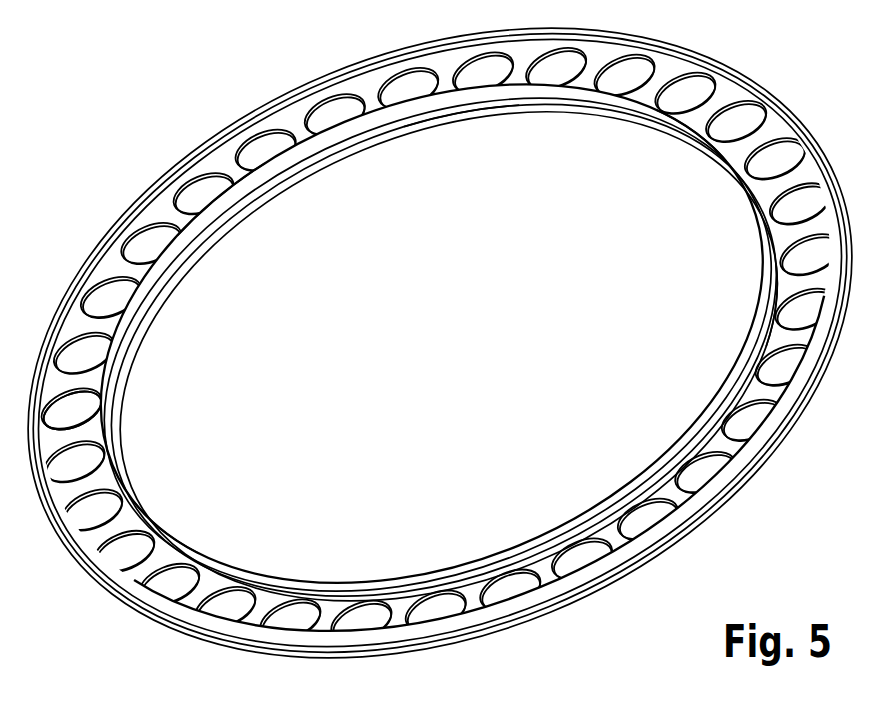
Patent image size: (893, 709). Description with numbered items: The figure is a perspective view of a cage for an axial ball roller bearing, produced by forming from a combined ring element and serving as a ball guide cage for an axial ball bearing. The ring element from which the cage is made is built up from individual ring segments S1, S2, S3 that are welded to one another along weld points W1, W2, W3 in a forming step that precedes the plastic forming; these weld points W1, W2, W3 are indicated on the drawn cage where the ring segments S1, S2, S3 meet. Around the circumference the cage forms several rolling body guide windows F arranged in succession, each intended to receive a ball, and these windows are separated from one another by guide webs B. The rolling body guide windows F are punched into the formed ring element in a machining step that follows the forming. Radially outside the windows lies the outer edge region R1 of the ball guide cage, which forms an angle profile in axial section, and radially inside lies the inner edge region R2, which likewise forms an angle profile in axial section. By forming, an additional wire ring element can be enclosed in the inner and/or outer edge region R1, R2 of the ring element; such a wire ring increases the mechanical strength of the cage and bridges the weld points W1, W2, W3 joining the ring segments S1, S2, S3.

The outer edge region R1 is at (150, 195).
The inner edge region R2 is at (170, 260).
The ring segment S1 is at (460, 108).
The ring segment S2 is at (750, 313).
The ring segment S3 is at (150, 540).
The weld point W1 is at (257, 223).
The weld point W2 is at (677, 150).
The weld point W3 is at (588, 492).
The guide web B is at (100, 373).
The rolling body guide window F is at (77, 405).